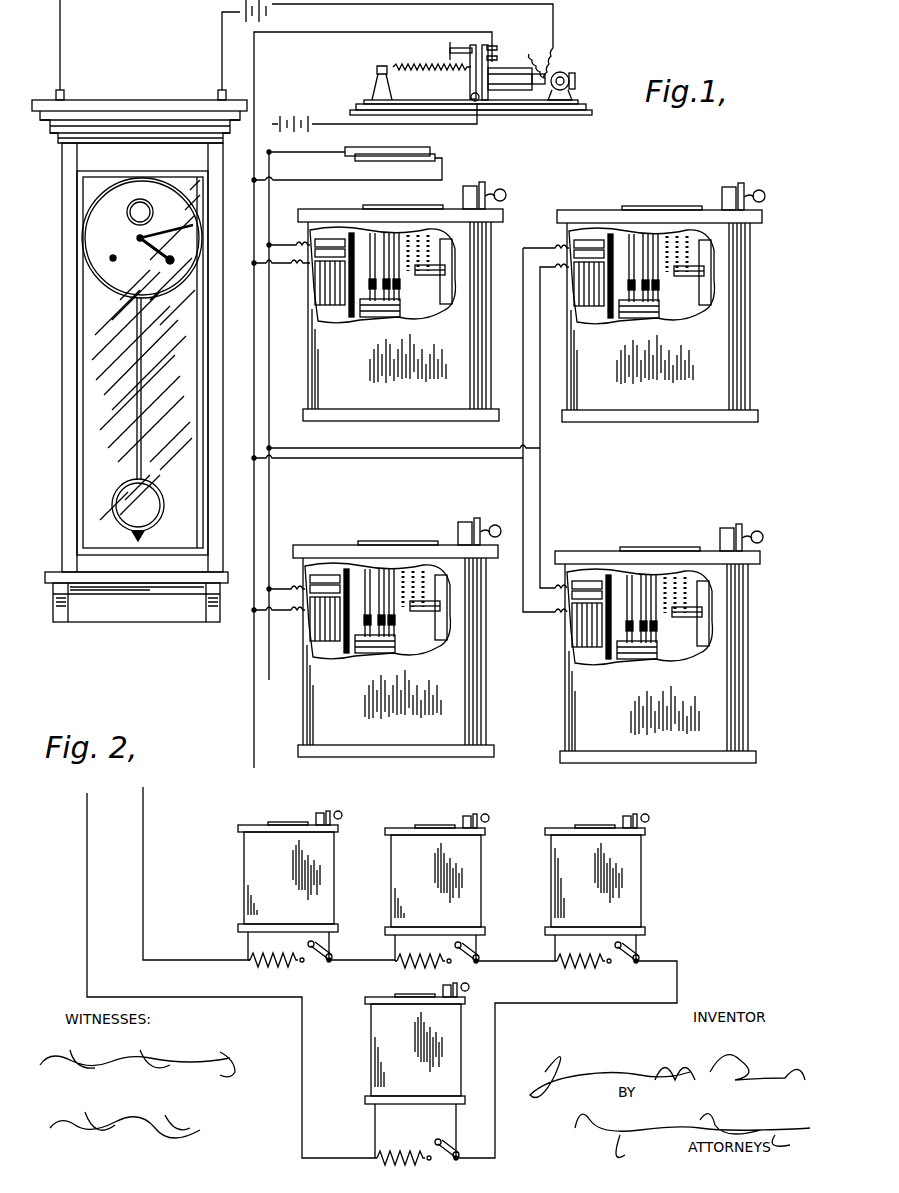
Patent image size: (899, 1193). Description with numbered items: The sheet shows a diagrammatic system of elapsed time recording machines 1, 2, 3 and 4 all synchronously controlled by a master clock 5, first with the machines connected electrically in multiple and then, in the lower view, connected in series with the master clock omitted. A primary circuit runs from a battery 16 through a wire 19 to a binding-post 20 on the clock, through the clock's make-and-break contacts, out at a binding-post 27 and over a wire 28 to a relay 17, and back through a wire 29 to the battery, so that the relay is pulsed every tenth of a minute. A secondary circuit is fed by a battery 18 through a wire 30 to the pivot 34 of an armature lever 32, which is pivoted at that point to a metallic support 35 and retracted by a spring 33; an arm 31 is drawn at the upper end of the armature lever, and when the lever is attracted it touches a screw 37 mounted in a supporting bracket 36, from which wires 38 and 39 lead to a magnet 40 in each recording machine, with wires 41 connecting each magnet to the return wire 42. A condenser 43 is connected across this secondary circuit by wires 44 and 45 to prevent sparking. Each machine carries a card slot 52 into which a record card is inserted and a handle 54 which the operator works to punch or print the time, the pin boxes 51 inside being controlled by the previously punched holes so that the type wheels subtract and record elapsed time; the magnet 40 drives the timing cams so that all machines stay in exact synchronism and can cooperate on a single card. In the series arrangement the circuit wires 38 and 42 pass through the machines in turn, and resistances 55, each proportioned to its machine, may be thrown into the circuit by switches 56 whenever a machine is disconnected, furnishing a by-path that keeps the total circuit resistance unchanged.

In FIG. 1, the elapsed time recording machine 1 is at (475, 312).
In FIG. 2, the elapsed time recording machine 1 is at (332, 892).
In FIG. 1, the elapsed time recording machine 2 is at (735, 332).
In FIG. 2, the elapsed time recording machine 2 is at (478, 894).
In FIG. 1, the elapsed time recording machine 3 is at (470, 672).
In FIG. 2, the elapsed time recording machine 3 is at (640, 894).
In FIG. 1, the elapsed time recording machine 4 is at (725, 680).
In FIG. 2, the elapsed time recording machine 4 is at (375, 1028).
In FIG. 1, the master clock 5 is at (62, 432).
In FIG. 1, the battery 16 is at (399, 24).
In FIG. 1, the relay 17 is at (512, 82).
In FIG. 1, the battery 18 is at (292, 118).
In FIG. 1, the wire 19 is at (222, 40).
In FIG. 1, the binding-post 20 is at (218, 94).
In FIG. 1, the binding-post 27 is at (64, 99).
In FIG. 1, the wire 28 is at (112, 45).
In FIG. 1, the wire 29 is at (505, 39).
In FIG. 1, the wire 30 is at (478, 104).
In FIG. 1, the armature arm 31 is at (450, 48).
In FIG. 1, the armature lever 32 is at (470, 74).
In FIG. 1, the spring 33 is at (398, 66).
In FIG. 1, the pivot 34 is at (480, 100).
In FIG. 1, the metallic support 35 is at (470, 97).
In FIG. 1, the supporting bracket 36 is at (500, 86).
In FIG. 1, the screw 37 is at (496, 48).
In FIG. 1, the wire 38 is at (312, 33).
In FIG. 2, the wire 38 is at (87, 876).
In FIG. 1, the wire 39 is at (282, 268).
In FIG. 1, the magnet 40 is at (325, 282).
In FIG. 1, the wire 41 is at (282, 244).
In FIG. 1, the return wire 42 is at (280, 508).
In FIG. 2, the return wire 42 is at (145, 892).
In FIG. 1, the condenser 43 is at (382, 150).
In FIG. 1, the wire 44 is at (347, 166).
In FIG. 1, the wire 45 is at (352, 180).
In FIG. 1, the pin box 51 is at (380, 312).
In FIG. 1, the card slot 52 is at (392, 208).
In FIG. 1, the handle 54 is at (496, 200).
In FIG. 2, the handle 54 is at (342, 812).
In FIG. 2, the resistance 55 is at (284, 962).
In FIG. 2, the switch 56 is at (332, 948).